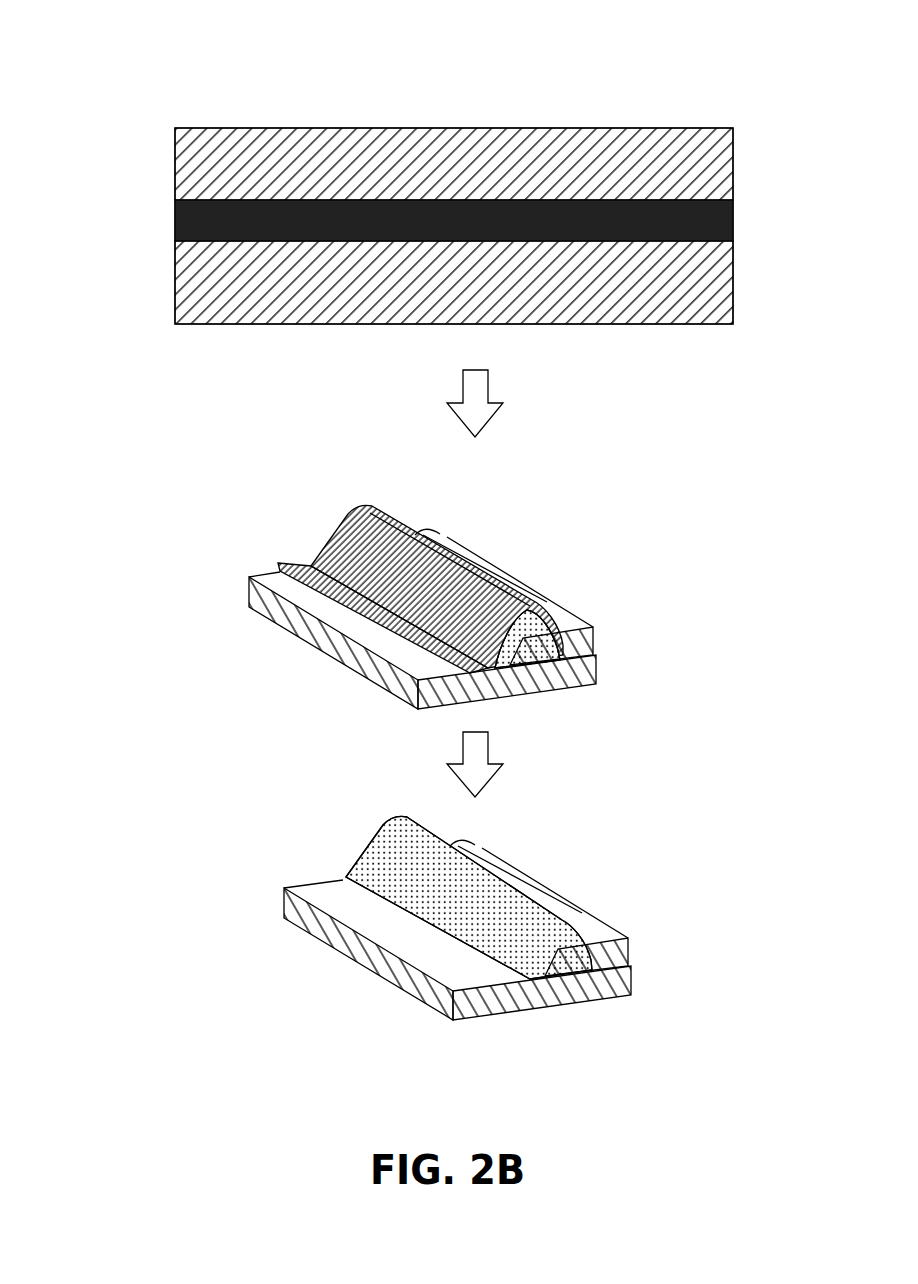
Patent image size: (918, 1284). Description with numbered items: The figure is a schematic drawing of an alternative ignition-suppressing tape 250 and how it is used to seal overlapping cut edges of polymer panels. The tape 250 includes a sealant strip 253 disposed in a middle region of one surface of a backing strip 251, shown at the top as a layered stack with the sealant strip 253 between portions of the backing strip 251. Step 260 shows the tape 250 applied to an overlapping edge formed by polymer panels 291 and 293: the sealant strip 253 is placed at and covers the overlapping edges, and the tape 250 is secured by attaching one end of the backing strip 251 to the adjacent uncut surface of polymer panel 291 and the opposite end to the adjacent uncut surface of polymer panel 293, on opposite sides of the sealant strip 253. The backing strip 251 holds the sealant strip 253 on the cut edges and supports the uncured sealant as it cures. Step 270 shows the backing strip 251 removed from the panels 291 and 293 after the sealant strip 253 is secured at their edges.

The ignition-suppressing tape 250 is at (492, 75).
The backing strip 251 is at (744, 170).
The sealant strip 253 is at (744, 219).
The step 260 is at (148, 570).
The step 270 is at (175, 851).
The polymer panel 291 is at (598, 632).
The polymer panel 293 is at (598, 667).